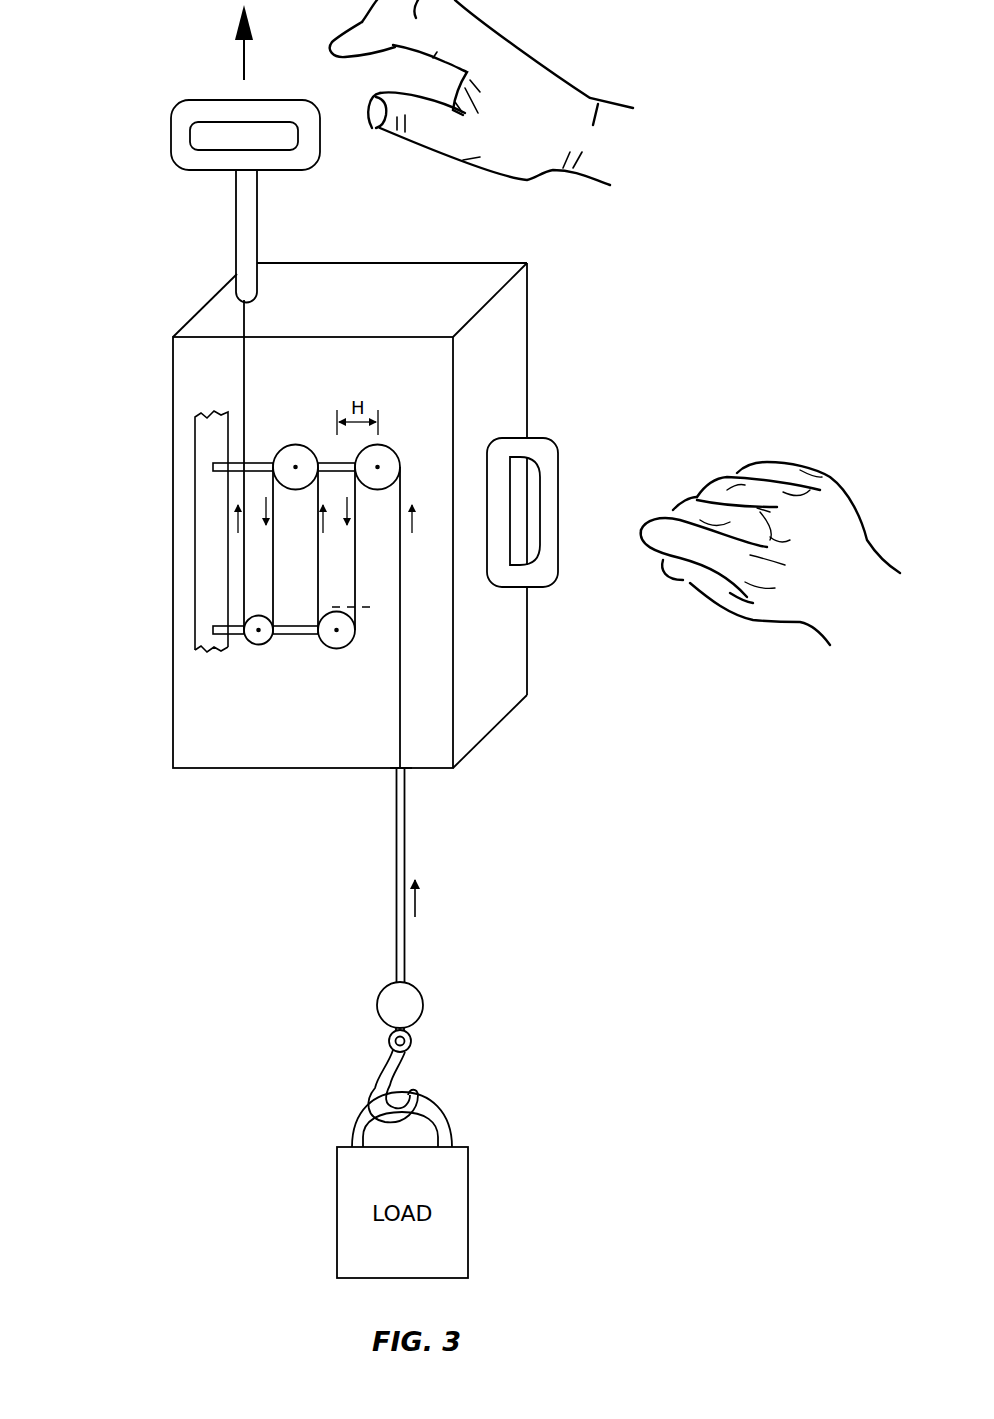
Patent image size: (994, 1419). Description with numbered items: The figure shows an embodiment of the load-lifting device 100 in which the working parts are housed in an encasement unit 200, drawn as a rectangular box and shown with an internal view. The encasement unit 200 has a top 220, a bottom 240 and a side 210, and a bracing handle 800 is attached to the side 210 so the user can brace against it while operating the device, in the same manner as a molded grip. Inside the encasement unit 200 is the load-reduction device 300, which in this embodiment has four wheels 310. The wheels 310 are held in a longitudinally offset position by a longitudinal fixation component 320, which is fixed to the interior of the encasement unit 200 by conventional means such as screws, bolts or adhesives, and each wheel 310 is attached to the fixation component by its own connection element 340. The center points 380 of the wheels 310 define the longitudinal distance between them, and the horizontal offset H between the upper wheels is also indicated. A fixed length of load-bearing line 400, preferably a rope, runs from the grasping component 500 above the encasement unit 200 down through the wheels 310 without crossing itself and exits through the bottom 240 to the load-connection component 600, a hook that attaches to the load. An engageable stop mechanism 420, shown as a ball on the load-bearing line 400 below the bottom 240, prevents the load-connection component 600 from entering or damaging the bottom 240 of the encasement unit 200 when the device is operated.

The load-lifting device 100 is at (162, 222).
The encasement unit 200 is at (360, 532).
The side surface of housing 210 is at (497, 343).
The top of the encasement unit 220 is at (440, 290).
The bottom of the encasement unit 240 is at (437, 770).
The load-reduction device 300 is at (423, 445).
The wheels 310 is at (299, 447).
The longitudinal fixation component 320 is at (213, 588).
The connection element 340 is at (214, 461).
The center points of the wheels 380 is at (295, 466).
The fixed length of load-bearing line 400 is at (243, 378).
The engageable stop mechanism 420 is at (410, 998).
The grasping component 500 is at (288, 160).
The load-connection component 600 is at (420, 1115).
The bracing handle 800 is at (547, 470).